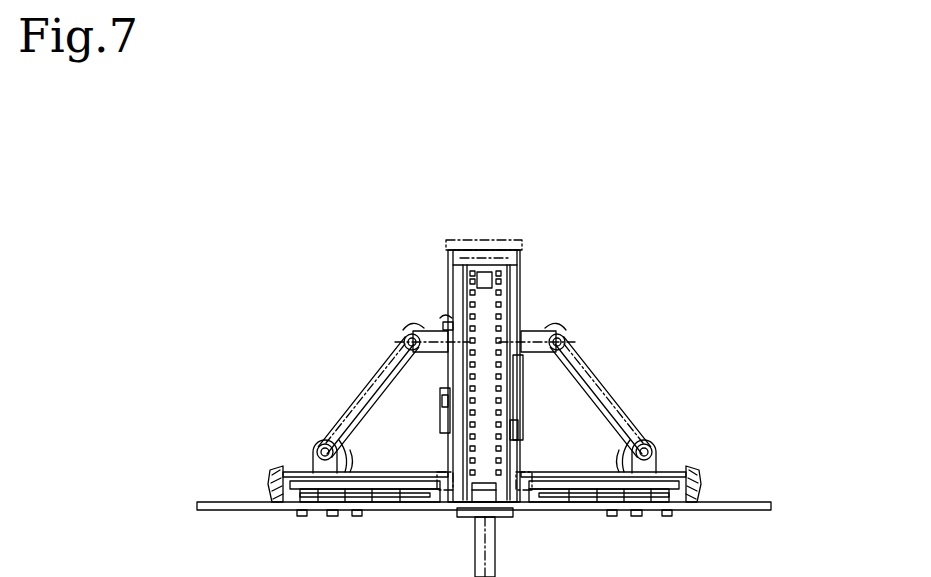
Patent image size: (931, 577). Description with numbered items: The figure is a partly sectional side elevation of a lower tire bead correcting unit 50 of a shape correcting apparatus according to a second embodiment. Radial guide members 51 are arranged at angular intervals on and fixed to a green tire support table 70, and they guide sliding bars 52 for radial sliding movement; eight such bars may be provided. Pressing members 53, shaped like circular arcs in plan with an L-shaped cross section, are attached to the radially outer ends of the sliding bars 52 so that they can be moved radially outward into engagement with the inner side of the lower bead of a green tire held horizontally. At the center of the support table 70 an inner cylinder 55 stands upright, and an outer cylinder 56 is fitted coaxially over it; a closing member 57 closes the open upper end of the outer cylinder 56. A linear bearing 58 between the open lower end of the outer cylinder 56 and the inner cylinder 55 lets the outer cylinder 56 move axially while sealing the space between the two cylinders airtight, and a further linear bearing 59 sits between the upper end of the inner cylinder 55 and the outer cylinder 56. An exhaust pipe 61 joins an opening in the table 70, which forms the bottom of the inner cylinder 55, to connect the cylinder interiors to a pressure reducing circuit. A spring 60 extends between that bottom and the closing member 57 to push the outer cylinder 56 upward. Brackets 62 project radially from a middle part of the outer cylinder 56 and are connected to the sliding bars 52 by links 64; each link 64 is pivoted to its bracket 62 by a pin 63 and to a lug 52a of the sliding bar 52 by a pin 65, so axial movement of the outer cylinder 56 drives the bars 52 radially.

The lower tire bead correcting unit 50 is at (318, 293).
The radial guide member 51 is at (313, 503).
The sliding bar 52 is at (383, 488).
The lug 52a is at (310, 458).
The pressing member 53 is at (267, 472).
The inner cylinder 55 is at (510, 462).
The outer cylinder 56 is at (521, 284).
The closing member 57 is at (478, 250).
The linear bearing 58 is at (447, 427).
The linear bearing 59 is at (450, 322).
The spring 60 is at (502, 376).
The exhaust pipe 61 is at (488, 517).
The bracket 62 is at (412, 322).
The pin 63 is at (404, 340).
The link 64 is at (367, 400).
The pin 65 is at (322, 443).
The green tire support table 70 is at (743, 501).